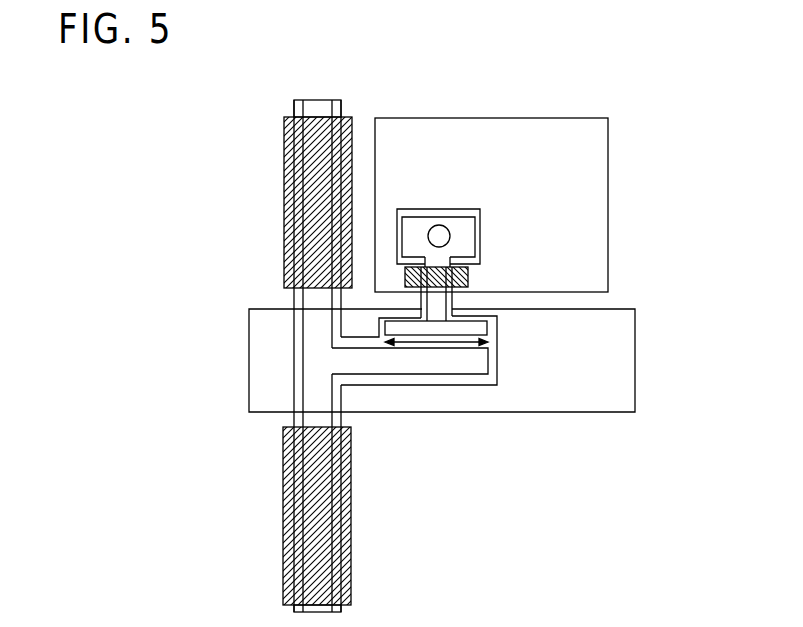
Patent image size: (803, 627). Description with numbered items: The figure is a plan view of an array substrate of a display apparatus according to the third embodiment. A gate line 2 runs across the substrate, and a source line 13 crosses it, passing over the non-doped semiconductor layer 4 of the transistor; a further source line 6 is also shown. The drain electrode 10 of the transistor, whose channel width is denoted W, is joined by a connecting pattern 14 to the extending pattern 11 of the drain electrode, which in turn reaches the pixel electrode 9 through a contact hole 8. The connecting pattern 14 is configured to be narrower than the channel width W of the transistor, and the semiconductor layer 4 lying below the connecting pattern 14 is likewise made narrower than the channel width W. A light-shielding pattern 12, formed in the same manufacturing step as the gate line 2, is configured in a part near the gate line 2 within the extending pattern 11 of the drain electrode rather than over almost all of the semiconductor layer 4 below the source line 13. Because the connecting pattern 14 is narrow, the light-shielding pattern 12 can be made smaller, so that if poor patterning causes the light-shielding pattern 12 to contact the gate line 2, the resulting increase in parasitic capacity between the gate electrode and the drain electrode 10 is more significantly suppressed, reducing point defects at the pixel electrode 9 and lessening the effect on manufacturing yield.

The gate line 2 is at (545, 372).
The non-doped semiconductor layer 4 is at (403, 385).
The source line 6 is at (458, 360).
The contact hole 8 is at (440, 226).
The pixel electrode 9 is at (592, 235).
The drain electrode 10 is at (478, 328).
The extending pattern of the drain electrode 11 is at (470, 230).
The light-shielding pattern 12 is at (468, 278).
The source line 13 is at (318, 105).
The connecting pattern 14 is at (438, 302).
The channel width of a transistor W is at (433, 343).